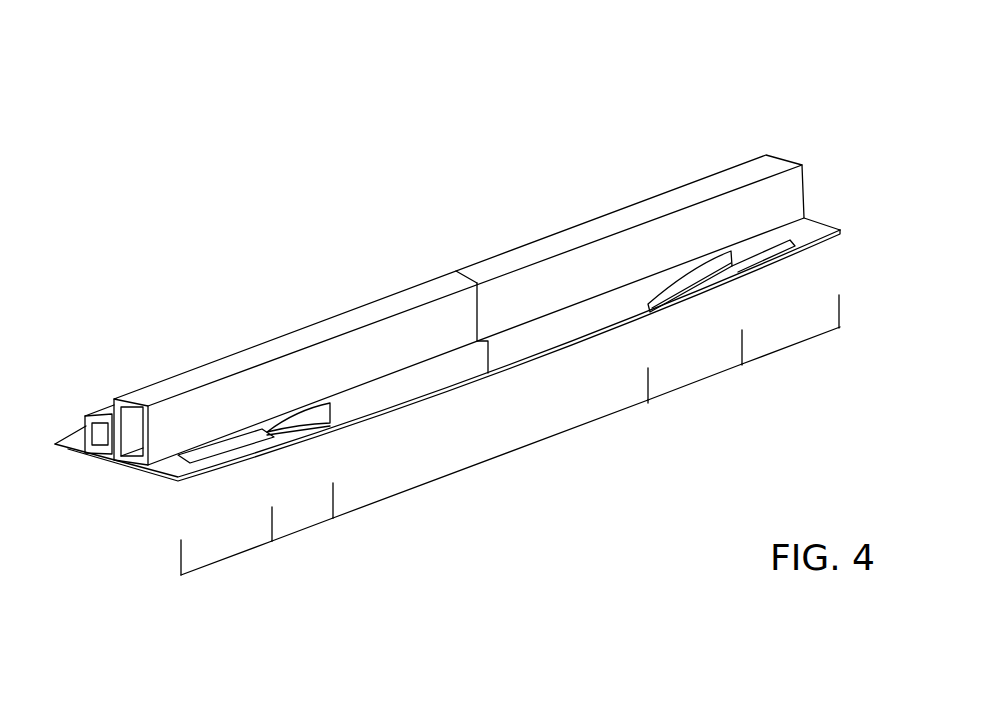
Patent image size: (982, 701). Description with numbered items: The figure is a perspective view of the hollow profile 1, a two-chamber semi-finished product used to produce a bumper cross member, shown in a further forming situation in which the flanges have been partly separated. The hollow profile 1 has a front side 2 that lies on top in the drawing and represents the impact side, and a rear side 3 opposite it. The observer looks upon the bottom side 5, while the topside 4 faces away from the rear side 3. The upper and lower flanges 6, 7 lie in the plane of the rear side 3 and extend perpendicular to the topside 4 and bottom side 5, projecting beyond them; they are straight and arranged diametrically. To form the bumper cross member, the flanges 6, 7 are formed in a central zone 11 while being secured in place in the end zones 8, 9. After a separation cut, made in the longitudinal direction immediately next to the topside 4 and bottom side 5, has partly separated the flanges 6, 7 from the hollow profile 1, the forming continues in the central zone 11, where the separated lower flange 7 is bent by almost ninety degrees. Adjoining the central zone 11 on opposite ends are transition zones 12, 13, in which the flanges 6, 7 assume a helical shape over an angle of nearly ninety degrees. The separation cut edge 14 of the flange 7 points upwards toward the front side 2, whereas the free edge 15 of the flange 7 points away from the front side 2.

The hollow profile 1 is at (736, 164).
The front side 2 is at (538, 252).
The rear side 3 is at (114, 463).
The topside 4 is at (86, 436).
The bottom side 5 is at (660, 258).
The upper flange 6 is at (70, 462).
The lower flange 7 is at (432, 358).
The end zone 8 is at (226, 541).
The end zone 9 is at (791, 329).
The central zone 11 is at (490, 443).
The transition zone 12 is at (302, 512).
The transition zone 13 is at (695, 365).
The separation cut edge 14 is at (540, 315).
The free edge 15 is at (492, 373).